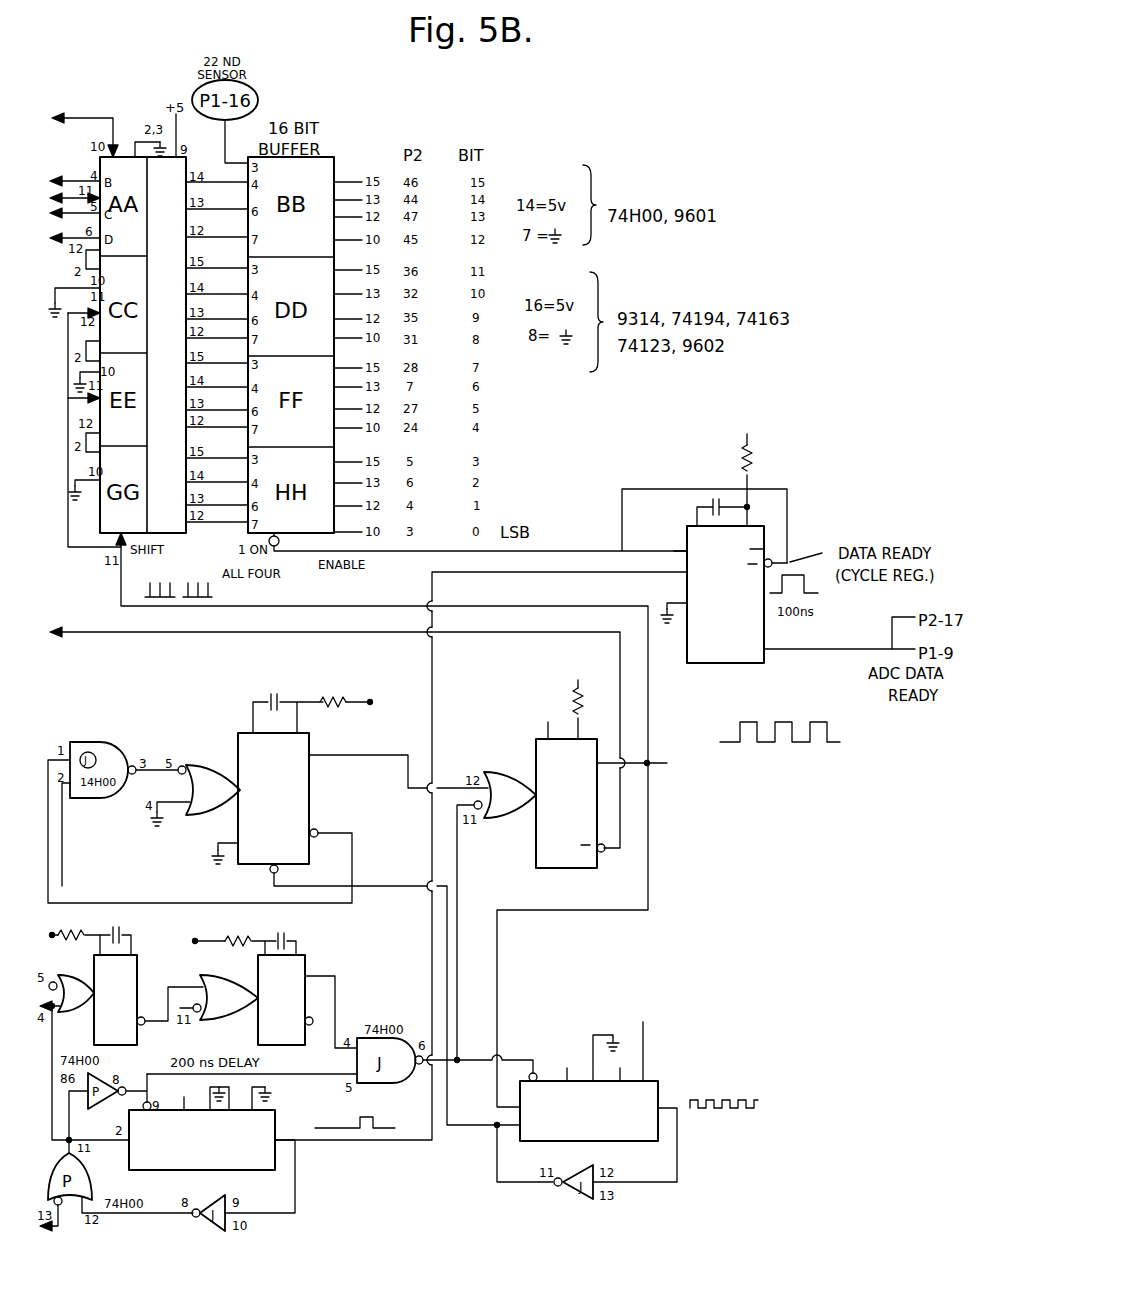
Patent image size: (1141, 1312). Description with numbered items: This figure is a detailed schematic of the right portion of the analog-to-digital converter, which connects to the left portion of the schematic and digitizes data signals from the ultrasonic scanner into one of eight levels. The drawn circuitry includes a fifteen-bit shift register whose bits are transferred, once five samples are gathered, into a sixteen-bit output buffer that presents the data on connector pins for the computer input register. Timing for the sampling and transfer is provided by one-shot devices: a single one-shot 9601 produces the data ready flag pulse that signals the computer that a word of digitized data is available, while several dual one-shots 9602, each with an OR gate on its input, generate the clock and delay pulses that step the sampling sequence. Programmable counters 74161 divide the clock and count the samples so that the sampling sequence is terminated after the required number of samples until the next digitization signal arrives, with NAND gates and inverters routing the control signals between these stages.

The single one-shot 9601 is at (786, 541).
The dual one-shot with OR gate on input 9602 is at (350, 893).
The programmable counter 74161 is at (443, 1117).